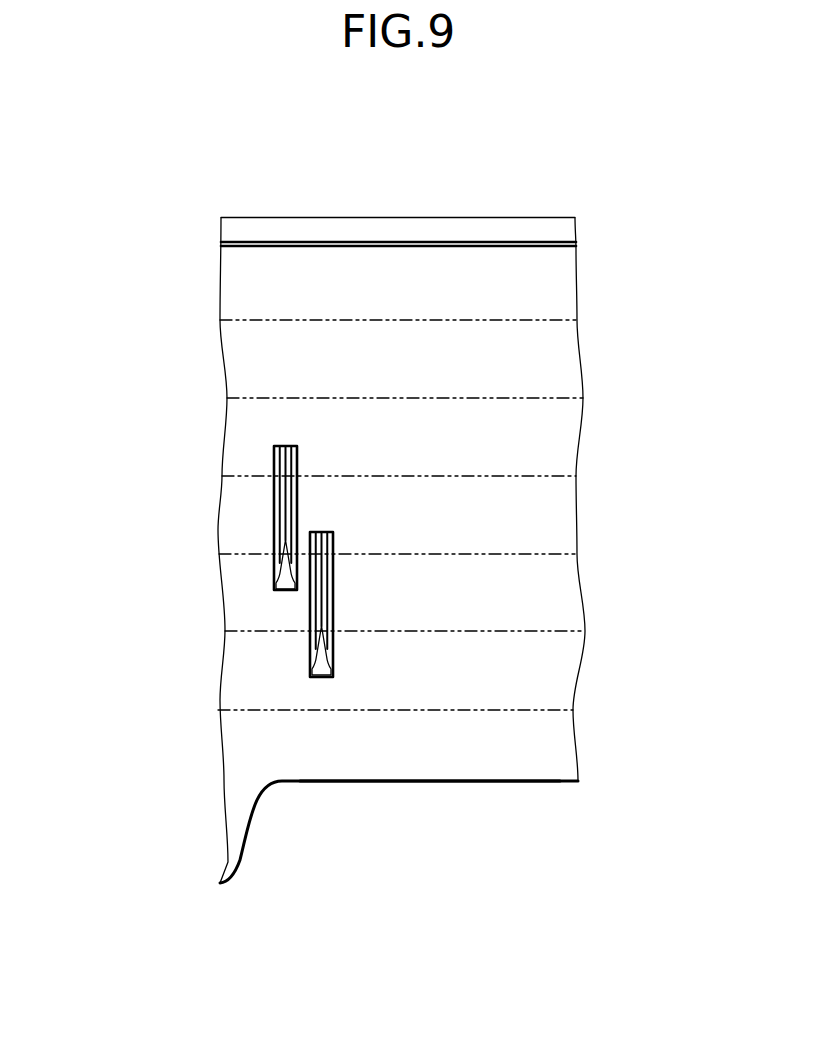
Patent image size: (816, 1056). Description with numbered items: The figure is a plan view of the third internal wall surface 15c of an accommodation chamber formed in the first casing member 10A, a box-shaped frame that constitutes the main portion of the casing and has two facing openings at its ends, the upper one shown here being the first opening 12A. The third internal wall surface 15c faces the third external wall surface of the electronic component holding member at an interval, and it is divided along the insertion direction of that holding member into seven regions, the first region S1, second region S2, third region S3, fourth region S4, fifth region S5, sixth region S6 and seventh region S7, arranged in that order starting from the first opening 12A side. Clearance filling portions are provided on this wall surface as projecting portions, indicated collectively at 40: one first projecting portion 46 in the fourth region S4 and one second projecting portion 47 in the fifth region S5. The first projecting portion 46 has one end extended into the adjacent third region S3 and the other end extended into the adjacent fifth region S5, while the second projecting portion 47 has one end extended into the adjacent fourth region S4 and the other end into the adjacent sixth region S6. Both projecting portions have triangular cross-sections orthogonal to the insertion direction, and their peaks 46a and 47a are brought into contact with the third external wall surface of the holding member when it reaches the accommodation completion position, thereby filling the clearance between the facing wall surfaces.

The first casing member 10A is at (483, 152).
The first opening 12A is at (348, 227).
The third internal wall surface 15c is at (483, 753).
The drive wiring group 40 is at (80, 575).
The first projecting portion 46 is at (274, 565).
The peak of the first projecting portion 46a is at (283, 492).
The second projecting portion 47 is at (310, 603).
The peak of the second projecting portion 47a is at (321, 615).
The first region S1 is at (598, 248).
The second region S2 is at (598, 327).
The third region S3 is at (598, 403).
The fourth region S4 is at (598, 480).
The fifth region S5 is at (598, 560).
The sixth region S6 is at (598, 637).
The seventh region S7 is at (598, 715).